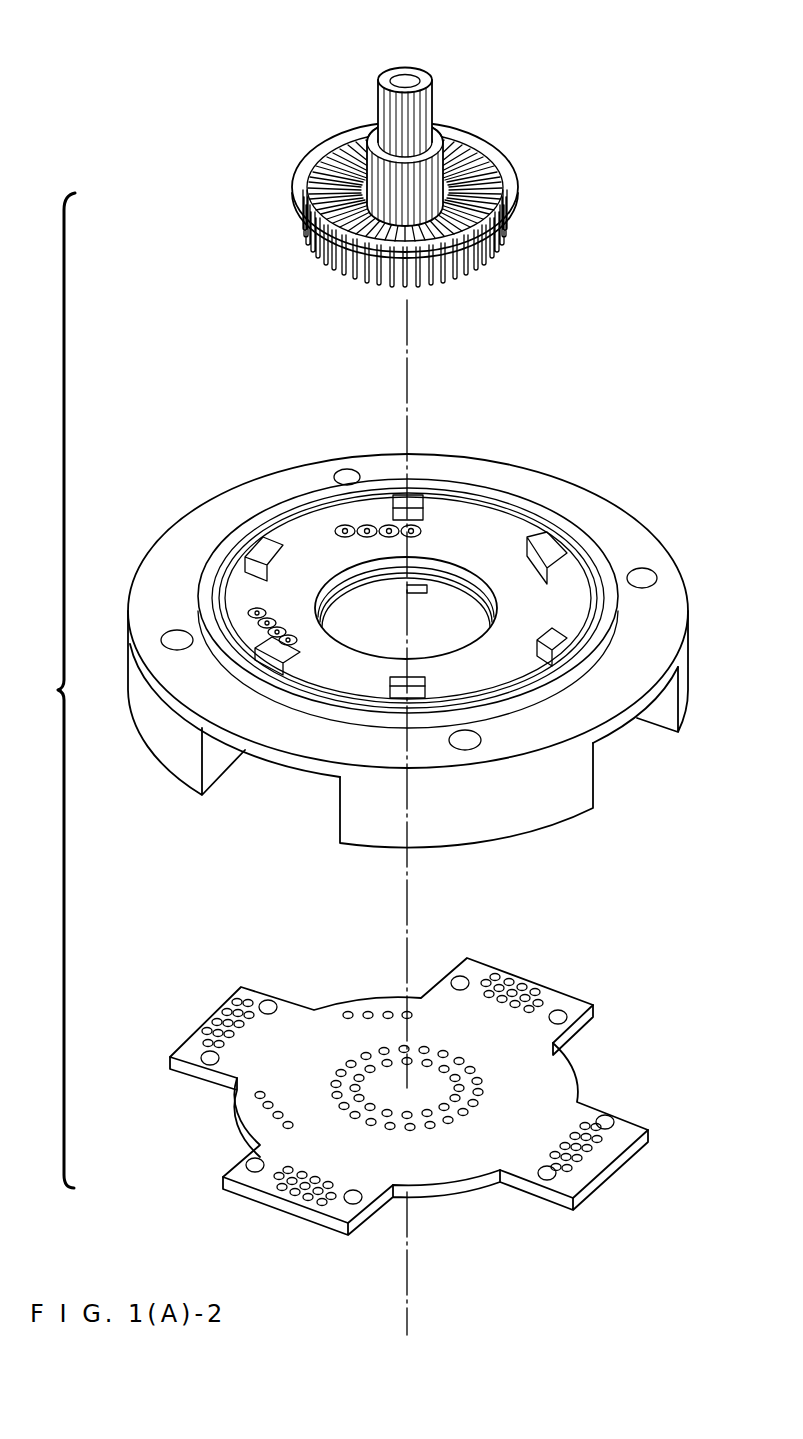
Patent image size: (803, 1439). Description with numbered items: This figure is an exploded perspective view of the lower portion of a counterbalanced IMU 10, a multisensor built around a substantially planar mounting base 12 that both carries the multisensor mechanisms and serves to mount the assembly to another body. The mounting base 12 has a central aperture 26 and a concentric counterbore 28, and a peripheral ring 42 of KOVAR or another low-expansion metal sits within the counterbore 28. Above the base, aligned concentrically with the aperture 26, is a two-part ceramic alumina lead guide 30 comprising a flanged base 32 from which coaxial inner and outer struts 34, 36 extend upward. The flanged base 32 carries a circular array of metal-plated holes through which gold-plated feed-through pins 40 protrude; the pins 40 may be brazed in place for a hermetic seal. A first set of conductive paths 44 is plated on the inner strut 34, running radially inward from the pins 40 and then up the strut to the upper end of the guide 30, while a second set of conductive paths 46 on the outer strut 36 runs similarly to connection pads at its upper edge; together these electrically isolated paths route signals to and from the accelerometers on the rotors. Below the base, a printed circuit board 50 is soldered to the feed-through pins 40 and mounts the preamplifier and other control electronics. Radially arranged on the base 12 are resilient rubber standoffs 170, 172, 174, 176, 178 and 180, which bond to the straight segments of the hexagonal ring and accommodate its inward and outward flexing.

The counterbalanced IMU 10 is at (48, 706).
The mounting base 12 is at (419, 631).
The central aperture 26 is at (442, 624).
The concentric counterbore 28 is at (348, 578).
The lead guide 30 is at (455, 158).
The flanged base 32 is at (517, 207).
The inner strut 34 is at (437, 104).
The outer strut 36 is at (448, 160).
The feed-through pins 40 is at (496, 257).
The peripheral ring 42 is at (302, 192).
The conductive paths 44 is at (380, 112).
The conductive paths 46 is at (345, 170).
The printed circuit board 50 is at (604, 1056).
The standoff 170 is at (266, 558).
The standoff 172 is at (297, 658).
The standoff 174 is at (424, 686).
The standoff 176 is at (541, 639).
The standoff 178 is at (533, 575).
The standoff 180 is at (423, 513).